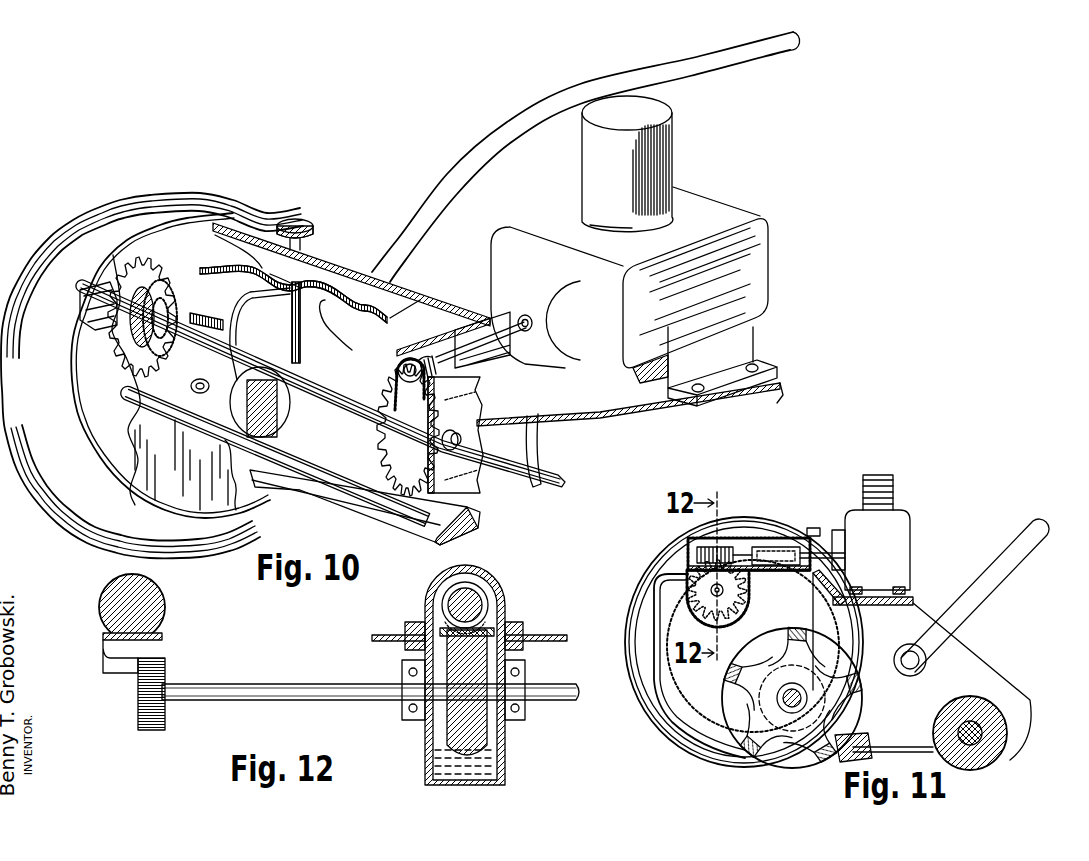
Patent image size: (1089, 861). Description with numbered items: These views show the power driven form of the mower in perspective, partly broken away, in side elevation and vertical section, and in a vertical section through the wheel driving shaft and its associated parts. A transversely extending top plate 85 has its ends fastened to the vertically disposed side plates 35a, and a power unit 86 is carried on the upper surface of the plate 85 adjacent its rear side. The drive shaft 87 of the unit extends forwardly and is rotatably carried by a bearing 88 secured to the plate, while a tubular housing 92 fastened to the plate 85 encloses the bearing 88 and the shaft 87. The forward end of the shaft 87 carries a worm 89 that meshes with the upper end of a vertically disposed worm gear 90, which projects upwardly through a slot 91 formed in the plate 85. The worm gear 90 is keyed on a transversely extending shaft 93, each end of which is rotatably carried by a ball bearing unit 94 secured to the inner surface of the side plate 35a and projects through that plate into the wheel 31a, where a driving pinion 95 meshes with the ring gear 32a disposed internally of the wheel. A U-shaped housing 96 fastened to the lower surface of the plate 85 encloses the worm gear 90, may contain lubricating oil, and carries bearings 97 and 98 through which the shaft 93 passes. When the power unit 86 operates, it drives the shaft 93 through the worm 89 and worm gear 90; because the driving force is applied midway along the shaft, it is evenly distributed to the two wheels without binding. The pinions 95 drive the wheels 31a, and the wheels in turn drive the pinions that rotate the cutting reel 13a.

In FIG. 10, the cutting reel 13a is at (294, 494).
In FIG. 11, the cutting reel 13a is at (872, 701).
In FIG. 10, the wheel 31a is at (51, 415).
In FIG. 11, the wheel 31a is at (657, 720).
In FIG. 12, the wheel 31a is at (103, 640).
In FIG. 10, the ring gear 32a is at (88, 297).
In FIG. 11, the ring gear 32a is at (840, 626).
In FIG. 10, the side plate 35a is at (156, 463).
In FIG. 11, the side plate 35a is at (670, 625).
In FIG. 10, the top plate 85 is at (585, 396).
In FIG. 11, the top plate 85 is at (683, 566).
In FIG. 12, the top plate 85 is at (545, 634).
In FIG. 10, the power unit 86 is at (661, 321).
In FIG. 11, the power unit 86 is at (890, 535).
In FIG. 10, the drive shaft 87 is at (516, 324).
In FIG. 11, the drive shaft 87 is at (835, 553).
In FIG. 12, the drive shaft 87 is at (488, 600).
In FIG. 10, the bearing 88 is at (500, 354).
In FIG. 11, the bearing 88 is at (778, 547).
In FIG. 10, the worm 89 is at (423, 356).
In FIG. 11, the worm 89 is at (700, 545).
In FIG. 12, the worm 89 is at (441, 601).
In FIG. 10, the worm gear 90 is at (421, 431).
In FIG. 11, the worm gear 90 is at (748, 578).
In FIG. 12, the worm gear 90 is at (505, 731).
In FIG. 10, the slot 91 is at (452, 396).
In FIG. 10, the tubular housing 92 is at (406, 358).
In FIG. 11, the tubular housing 92 is at (747, 538).
In FIG. 12, the tubular housing 92 is at (494, 577).
In FIG. 10, the shaft 93 is at (552, 474).
In FIG. 12, the shaft 93 is at (213, 692).
In FIG. 10, the ball bearing unit 94 is at (174, 300).
In FIG. 10, the driving pinion 95 is at (124, 288).
In FIG. 11, the driving pinion 95 is at (765, 604).
In FIG. 12, the driving pinion 95 is at (143, 684).
In FIG. 11, the U-shaped housing 96 is at (687, 590).
In FIG. 12, the U-shaped housing 96 is at (505, 762).
In FIG. 12, the bearing 97 is at (402, 671).
In FIG. 12, the bearing 98 is at (525, 672).